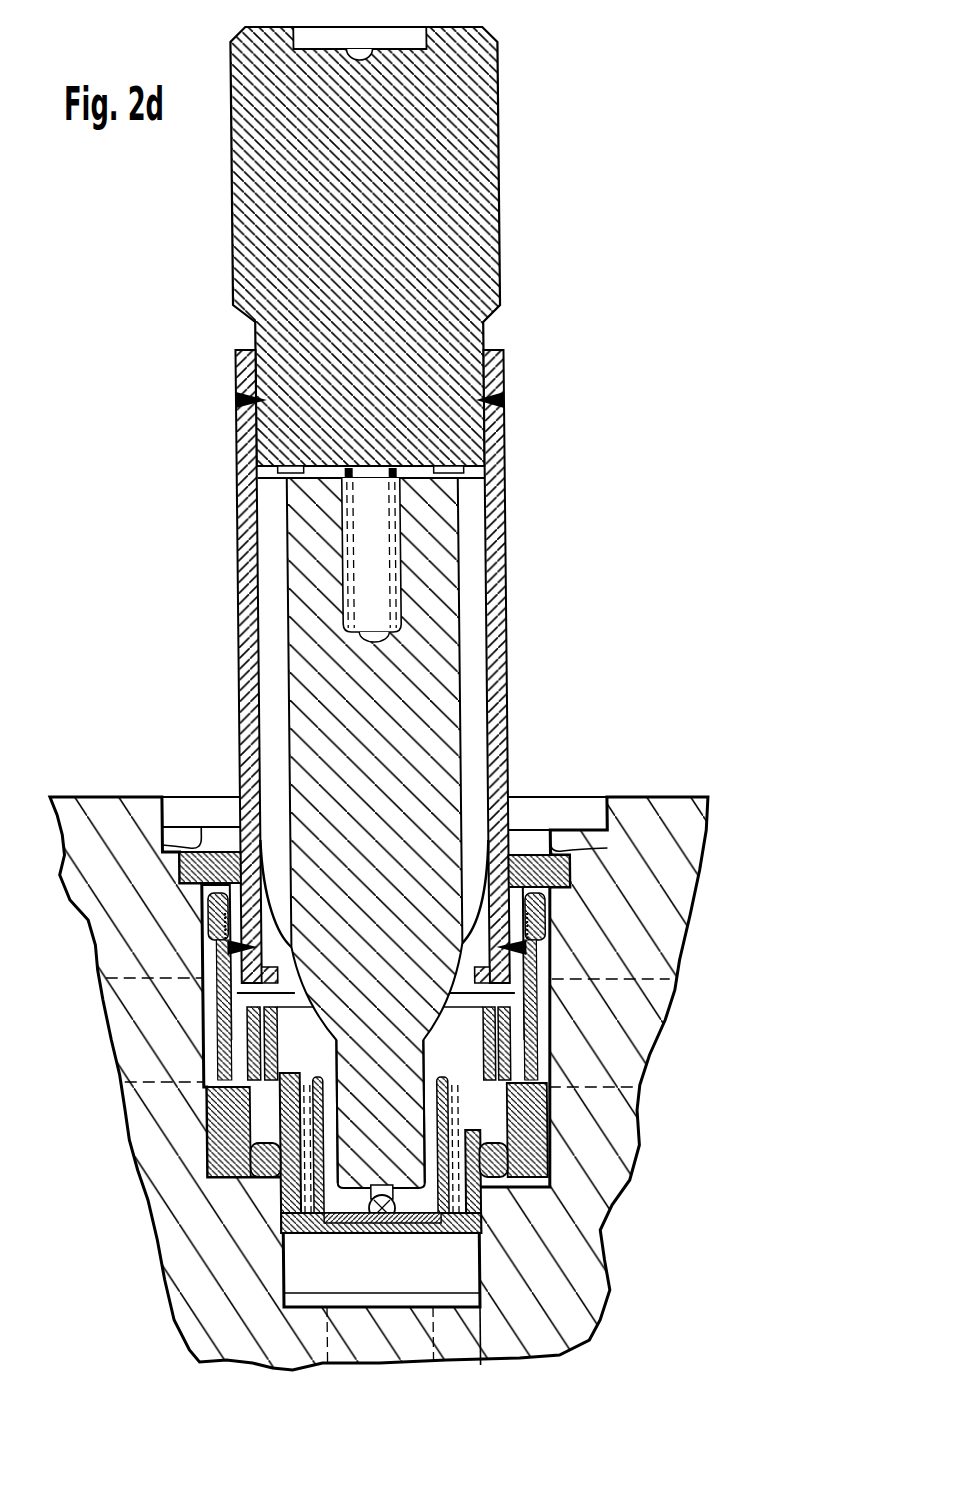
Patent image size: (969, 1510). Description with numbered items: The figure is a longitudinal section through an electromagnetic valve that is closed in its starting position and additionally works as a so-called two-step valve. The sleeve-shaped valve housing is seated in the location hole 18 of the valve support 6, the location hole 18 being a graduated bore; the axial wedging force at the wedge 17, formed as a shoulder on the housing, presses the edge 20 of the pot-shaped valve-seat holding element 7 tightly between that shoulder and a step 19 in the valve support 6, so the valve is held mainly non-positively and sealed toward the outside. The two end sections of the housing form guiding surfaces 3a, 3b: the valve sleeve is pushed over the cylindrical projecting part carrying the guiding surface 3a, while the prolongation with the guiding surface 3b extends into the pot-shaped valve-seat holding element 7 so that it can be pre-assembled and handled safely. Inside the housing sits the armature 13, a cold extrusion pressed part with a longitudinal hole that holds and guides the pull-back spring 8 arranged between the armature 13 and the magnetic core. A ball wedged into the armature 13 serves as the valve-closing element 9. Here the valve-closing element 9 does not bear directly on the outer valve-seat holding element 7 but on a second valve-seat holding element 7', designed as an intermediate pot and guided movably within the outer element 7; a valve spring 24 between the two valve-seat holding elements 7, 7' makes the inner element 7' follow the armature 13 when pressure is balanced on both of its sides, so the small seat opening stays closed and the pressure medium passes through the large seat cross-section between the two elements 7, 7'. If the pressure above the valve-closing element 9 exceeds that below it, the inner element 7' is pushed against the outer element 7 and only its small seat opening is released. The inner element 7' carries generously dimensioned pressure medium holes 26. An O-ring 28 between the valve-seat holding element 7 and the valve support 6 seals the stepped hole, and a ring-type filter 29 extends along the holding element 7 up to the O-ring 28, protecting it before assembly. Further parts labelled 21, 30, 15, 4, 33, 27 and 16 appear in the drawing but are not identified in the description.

The guiding surface 3a is at (250, 352).
The gap / press-fit zone (arrows) 21 is at (492, 402).
The recess in plug bottom 30 is at (453, 466).
The plate / disc 15 is at (455, 478).
The pull-back spring 8 is at (343, 481).
The armature 13 is at (430, 662).
The wedge 17 is at (192, 838).
The location hole 18 is at (215, 813).
The guiding surface 3b is at (520, 865).
The edge 20 is at (522, 852).
The valve support 6 is at (680, 840).
The step 19 is at (200, 890).
The valve-seat holding element 7 is at (505, 1017).
The second valve-seat holding element 7' is at (519, 1025).
The valve spring 24 is at (520, 1098).
The pressure medium holes 26 is at (293, 1092).
The valve tappet / lower piston part 4 is at (400, 1135).
The ring-type filter 29 is at (490, 1160).
The O-ring 28 is at (273, 1180).
The valve-closing element 9 is at (473, 1232).
The valve ball 33 is at (390, 1225).
The valve seat plate 27 is at (365, 1228).
The stop disc 16 is at (289, 993).